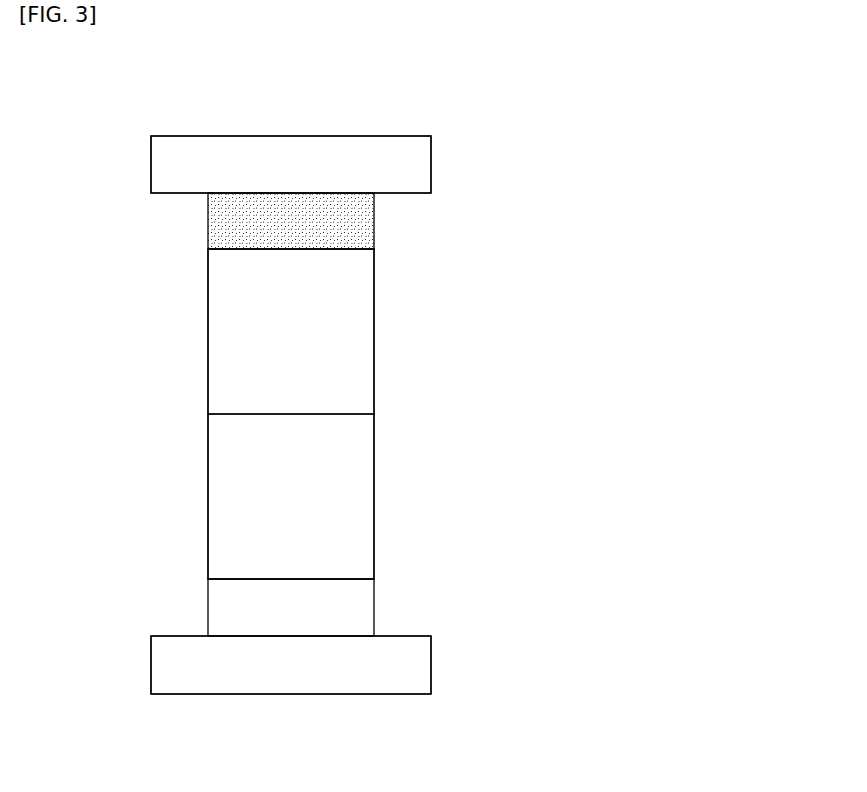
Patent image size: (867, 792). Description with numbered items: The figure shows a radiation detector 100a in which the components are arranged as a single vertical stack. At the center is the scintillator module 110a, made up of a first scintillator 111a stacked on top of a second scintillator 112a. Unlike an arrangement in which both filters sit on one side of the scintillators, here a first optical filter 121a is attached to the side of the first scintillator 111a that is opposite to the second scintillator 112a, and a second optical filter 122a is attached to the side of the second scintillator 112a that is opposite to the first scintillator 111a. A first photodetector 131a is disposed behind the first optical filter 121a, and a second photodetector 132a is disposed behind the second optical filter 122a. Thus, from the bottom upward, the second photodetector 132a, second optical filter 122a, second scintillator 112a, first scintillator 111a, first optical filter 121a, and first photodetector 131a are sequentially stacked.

The radiation detector 100a is at (542, 93).
The scintillator module 110a is at (468, 335).
The first scintillator 111a is at (347, 338).
The second scintillator 112a is at (347, 502).
The first optical filter 121a is at (234, 229).
The second optical filter 122a is at (228, 602).
The first photodetector 131a is at (285, 155).
The second photodetector 132a is at (279, 683).